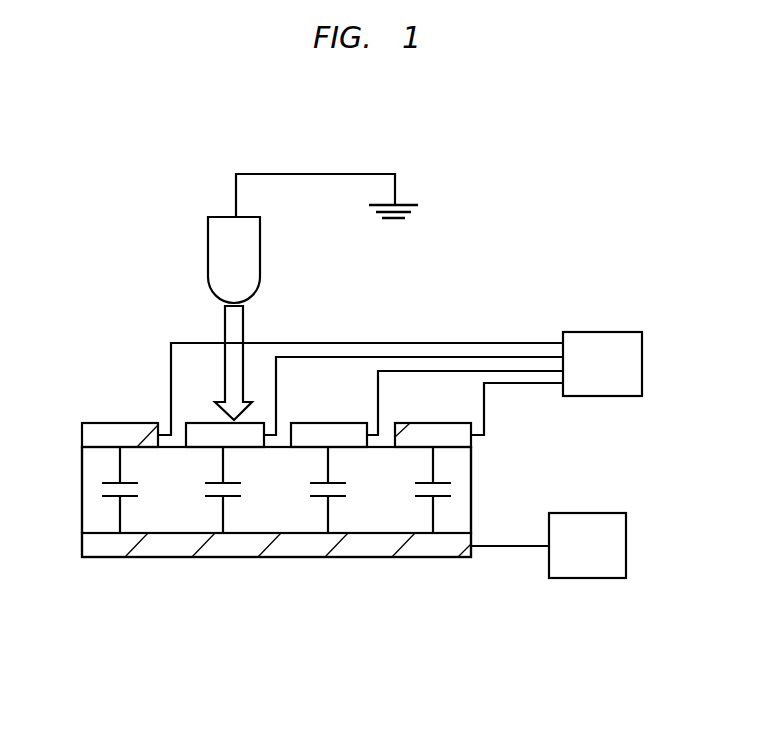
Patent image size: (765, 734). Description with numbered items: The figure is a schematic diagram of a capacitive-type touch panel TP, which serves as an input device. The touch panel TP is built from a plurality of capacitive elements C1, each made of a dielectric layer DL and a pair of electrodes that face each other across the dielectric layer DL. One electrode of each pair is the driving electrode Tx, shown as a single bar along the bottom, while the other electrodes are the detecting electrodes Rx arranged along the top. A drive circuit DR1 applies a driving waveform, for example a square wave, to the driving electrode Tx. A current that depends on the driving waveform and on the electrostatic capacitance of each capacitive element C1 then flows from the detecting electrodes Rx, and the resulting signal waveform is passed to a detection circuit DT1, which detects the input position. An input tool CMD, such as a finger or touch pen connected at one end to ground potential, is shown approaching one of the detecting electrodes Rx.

The capacitive-type touch panel TP is at (85, 335).
The input tool CMD is at (247, 265).
The detecting electrode Rx is at (433, 433).
The driving electrode Tx is at (85, 545).
The dielectric layer DL is at (92, 464).
The capacitive element C1 is at (132, 490).
The detection circuit DT1 is at (626, 362).
The drive circuit DR1 is at (613, 540).